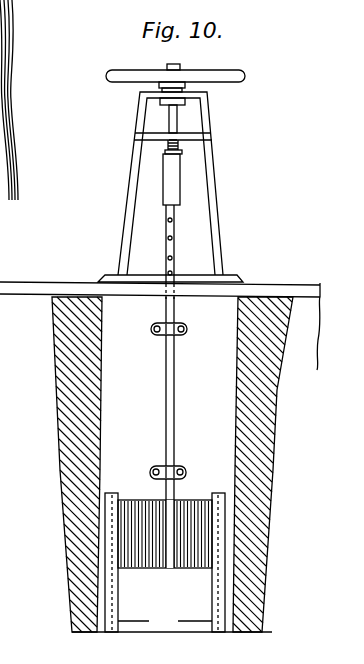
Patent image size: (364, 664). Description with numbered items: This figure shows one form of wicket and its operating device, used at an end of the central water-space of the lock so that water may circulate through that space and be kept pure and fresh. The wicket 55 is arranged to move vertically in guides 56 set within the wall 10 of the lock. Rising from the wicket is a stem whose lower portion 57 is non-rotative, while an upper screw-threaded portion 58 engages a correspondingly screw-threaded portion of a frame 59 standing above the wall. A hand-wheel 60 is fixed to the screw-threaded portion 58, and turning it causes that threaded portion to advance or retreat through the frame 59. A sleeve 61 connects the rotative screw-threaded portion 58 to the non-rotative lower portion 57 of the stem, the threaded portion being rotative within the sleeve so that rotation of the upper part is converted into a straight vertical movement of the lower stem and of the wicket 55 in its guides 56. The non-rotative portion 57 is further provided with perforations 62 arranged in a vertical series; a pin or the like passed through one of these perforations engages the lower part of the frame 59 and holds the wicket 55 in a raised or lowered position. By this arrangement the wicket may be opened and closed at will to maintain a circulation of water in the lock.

The wall of the lock 10 is at (62, 445).
The wicket 55 is at (188, 563).
The guides 56 is at (165, 562).
The stem 57 is at (178, 441).
The screw-threaded portion of the stem 58 is at (178, 132).
The frame 59 is at (214, 176).
The hand-wheel 60 is at (243, 74).
The sleeve 61 is at (172, 197).
The perforations 62 is at (173, 221).